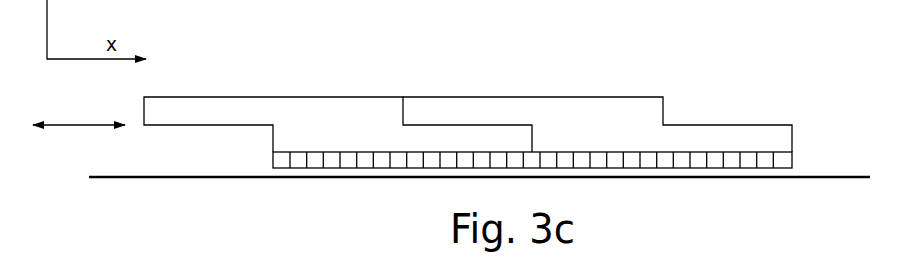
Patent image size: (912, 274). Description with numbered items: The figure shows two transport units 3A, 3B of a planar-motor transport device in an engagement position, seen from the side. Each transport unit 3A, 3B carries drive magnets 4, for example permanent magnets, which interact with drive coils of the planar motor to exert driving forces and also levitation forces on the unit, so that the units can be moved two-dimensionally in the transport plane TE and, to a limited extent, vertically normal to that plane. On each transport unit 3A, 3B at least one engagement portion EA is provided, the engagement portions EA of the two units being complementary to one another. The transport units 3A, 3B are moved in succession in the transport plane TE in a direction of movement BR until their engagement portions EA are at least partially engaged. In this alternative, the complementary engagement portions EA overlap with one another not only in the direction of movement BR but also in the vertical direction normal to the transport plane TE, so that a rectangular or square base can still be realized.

The transport unit 3A is at (198, 83).
The transport unit 3B is at (605, 85).
The drive magnets 4 is at (359, 169).
The engagement portion EA is at (220, 138).
The transport plane TE is at (838, 176).
The direction of movement BR is at (79, 109).